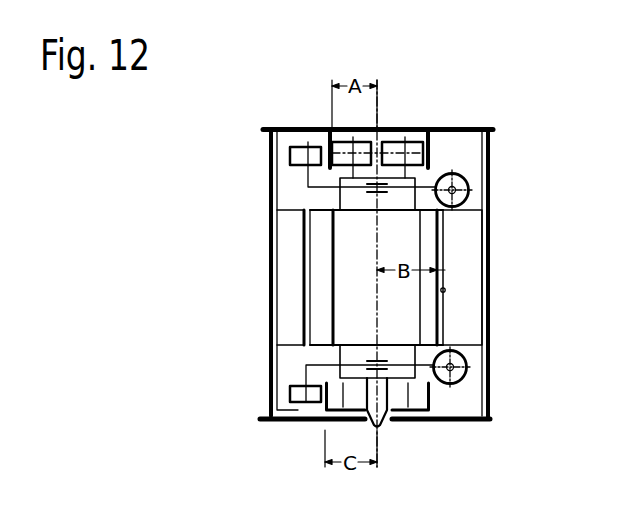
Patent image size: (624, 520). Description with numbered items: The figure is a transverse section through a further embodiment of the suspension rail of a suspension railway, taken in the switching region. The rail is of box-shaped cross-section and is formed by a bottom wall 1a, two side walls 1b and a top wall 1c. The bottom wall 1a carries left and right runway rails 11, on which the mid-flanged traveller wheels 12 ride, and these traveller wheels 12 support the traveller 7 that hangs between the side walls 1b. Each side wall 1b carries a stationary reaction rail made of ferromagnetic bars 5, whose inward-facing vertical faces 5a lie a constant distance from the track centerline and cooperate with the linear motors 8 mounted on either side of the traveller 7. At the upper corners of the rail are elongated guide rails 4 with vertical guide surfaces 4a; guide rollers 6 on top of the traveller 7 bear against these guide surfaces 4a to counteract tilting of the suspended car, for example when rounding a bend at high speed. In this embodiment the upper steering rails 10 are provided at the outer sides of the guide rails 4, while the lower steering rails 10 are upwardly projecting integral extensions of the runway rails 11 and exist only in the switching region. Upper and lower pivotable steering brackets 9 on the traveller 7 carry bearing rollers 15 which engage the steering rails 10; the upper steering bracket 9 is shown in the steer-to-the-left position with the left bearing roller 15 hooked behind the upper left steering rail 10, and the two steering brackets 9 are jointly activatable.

The bottom wall 1a is at (283, 424).
The side wall 1b is at (270, 165).
The top wall 1c is at (288, 126).
The guide rail 4 is at (442, 129).
The guide surface 4a is at (416, 150).
The ferromagnetic bar 5 is at (460, 233).
The vertical face 5a is at (445, 290).
The guide roller 6 is at (386, 152).
The traveller 7 is at (348, 248).
The linear motor 8 is at (323, 313).
The steering bracket 9 is at (453, 158).
The steering rail 10 is at (430, 160).
The runway rail 11 is at (399, 423).
The traveller wheel 12 is at (403, 397).
The bearing roller 15 is at (288, 393).